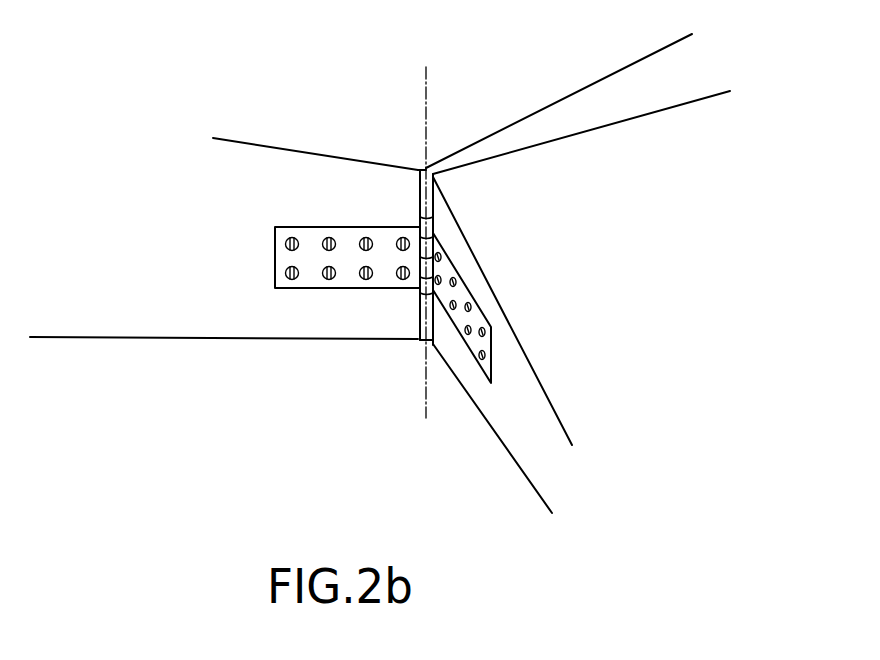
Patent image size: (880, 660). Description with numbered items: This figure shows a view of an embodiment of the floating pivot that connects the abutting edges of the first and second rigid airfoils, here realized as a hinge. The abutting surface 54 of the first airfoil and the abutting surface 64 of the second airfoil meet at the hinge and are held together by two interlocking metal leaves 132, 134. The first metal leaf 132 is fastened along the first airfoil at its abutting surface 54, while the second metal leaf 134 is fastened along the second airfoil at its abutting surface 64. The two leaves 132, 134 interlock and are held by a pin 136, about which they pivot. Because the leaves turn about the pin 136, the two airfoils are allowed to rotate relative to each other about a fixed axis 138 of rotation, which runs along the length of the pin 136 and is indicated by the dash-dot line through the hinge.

The abutting surface of the first airfoil 54 is at (70, 338).
The abutting surface of the second airfoil 64 is at (495, 435).
The first interlocking metal leaf 132 is at (318, 289).
The second interlocking metal leaf 134 is at (465, 288).
The pin 136 is at (420, 295).
The fixed axis of rotation 138 is at (426, 88).